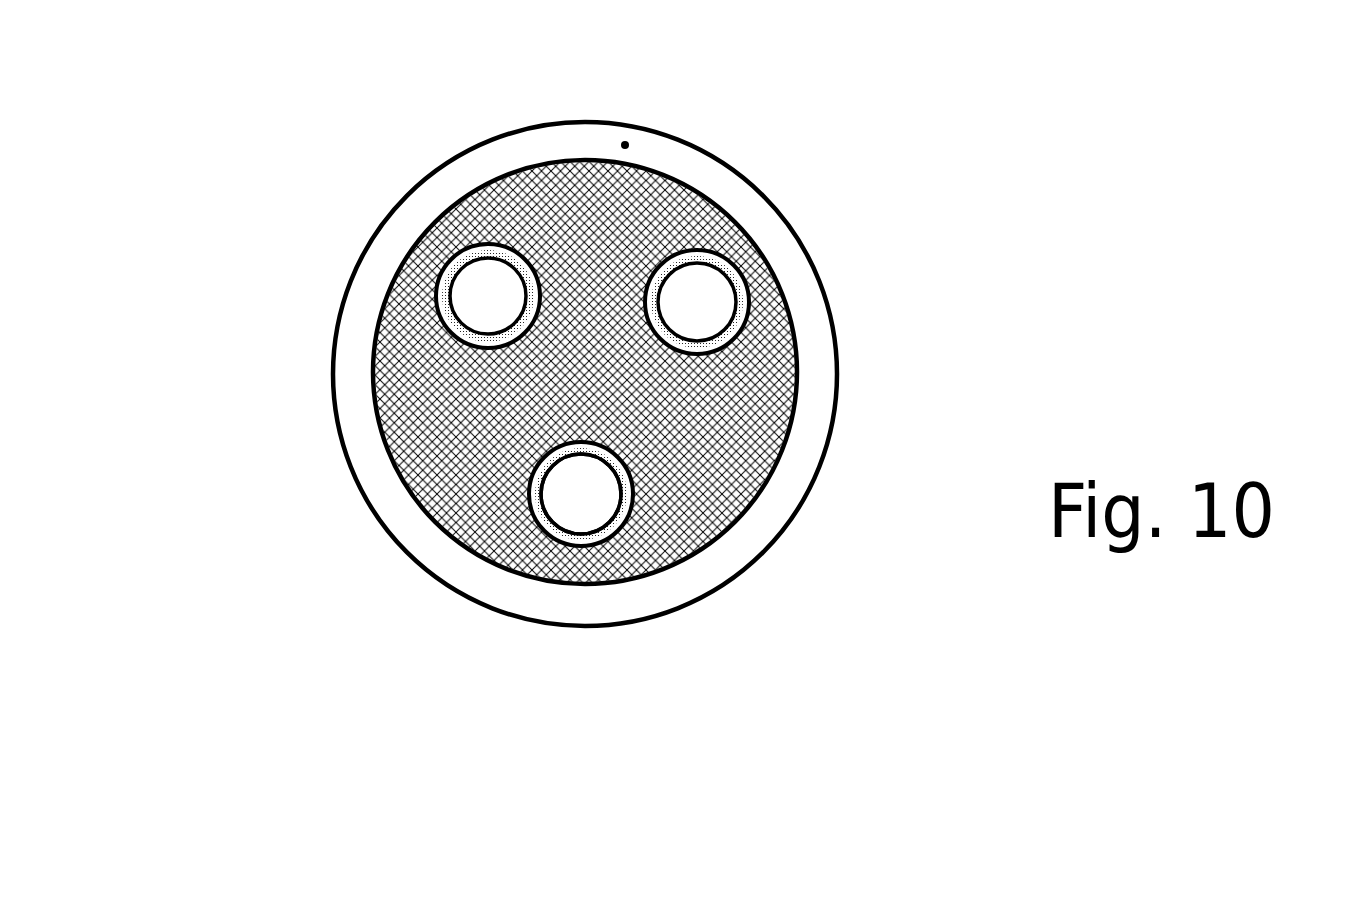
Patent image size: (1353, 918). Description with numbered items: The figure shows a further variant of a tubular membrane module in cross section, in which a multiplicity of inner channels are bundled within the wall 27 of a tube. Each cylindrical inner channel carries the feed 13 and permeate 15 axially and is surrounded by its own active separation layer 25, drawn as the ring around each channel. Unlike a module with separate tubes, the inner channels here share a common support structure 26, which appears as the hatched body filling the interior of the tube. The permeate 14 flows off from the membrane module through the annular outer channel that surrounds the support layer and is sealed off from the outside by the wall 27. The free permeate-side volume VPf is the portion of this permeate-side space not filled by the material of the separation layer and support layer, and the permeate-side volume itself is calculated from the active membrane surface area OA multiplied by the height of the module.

The wall of the membrane module 27 is at (434, 162).
The permeate 14 is at (355, 378).
The support layer 26 is at (603, 410).
The active separation layer 25 is at (449, 275).
The feed 13 is at (697, 303).
The permeate 15 is at (581, 494).
The active membrane surface area OA is at (558, 515).
The free permeate-side volume VPf is at (625, 145).